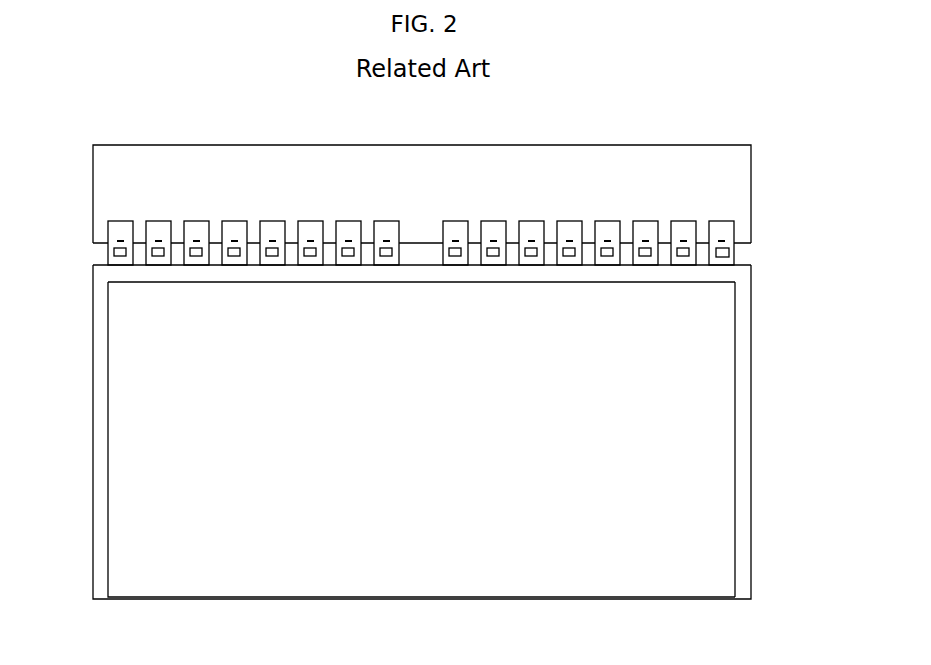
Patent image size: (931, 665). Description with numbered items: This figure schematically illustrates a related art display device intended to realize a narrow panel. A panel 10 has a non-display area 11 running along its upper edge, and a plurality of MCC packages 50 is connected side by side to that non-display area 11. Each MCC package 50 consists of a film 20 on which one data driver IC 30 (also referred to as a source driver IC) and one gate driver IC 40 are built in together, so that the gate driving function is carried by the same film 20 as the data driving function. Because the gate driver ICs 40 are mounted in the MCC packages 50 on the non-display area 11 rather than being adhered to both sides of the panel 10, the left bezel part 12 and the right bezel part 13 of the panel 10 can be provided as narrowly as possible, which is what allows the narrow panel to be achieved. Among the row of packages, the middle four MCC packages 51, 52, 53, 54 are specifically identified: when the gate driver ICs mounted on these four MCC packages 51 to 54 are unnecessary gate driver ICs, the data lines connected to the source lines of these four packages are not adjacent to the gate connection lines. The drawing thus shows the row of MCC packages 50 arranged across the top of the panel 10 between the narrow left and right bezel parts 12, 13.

The panel 10 is at (751, 330).
The non-display area 11 is at (123, 273).
The left bezel part 12 is at (102, 417).
The right bezel part 13 is at (743, 425).
The film 20 is at (735, 246).
The data driver IC 30 is at (724, 234).
The gate driver IC 40 is at (722, 255).
The MCC package 50 is at (779, 239).
The first MCC package 51 is at (353, 221).
The second MCC package 52 is at (390, 221).
The third MCC package 53 is at (458, 221).
The fourth MCC package 54 is at (495, 221).